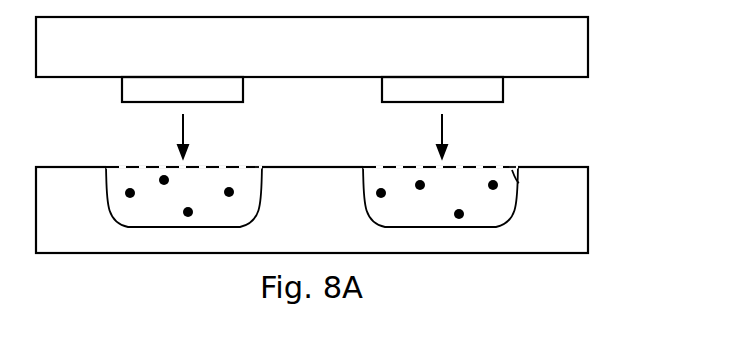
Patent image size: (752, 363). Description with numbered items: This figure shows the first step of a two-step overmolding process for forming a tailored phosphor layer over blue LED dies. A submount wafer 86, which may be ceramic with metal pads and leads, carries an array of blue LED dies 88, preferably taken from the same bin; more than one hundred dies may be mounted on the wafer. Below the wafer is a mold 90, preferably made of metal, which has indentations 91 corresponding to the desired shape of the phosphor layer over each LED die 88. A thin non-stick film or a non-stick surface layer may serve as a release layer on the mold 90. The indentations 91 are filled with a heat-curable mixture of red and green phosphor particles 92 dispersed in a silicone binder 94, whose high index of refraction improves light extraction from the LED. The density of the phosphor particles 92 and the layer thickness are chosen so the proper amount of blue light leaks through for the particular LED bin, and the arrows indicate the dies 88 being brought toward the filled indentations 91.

The submount wafer 86 is at (588, 55).
The blue LED die 88 is at (503, 89).
The mold 90 is at (588, 221).
The indentation 91 is at (519, 183).
The phosphor particles 92 is at (459, 214).
The silicone binder 94 is at (500, 210).